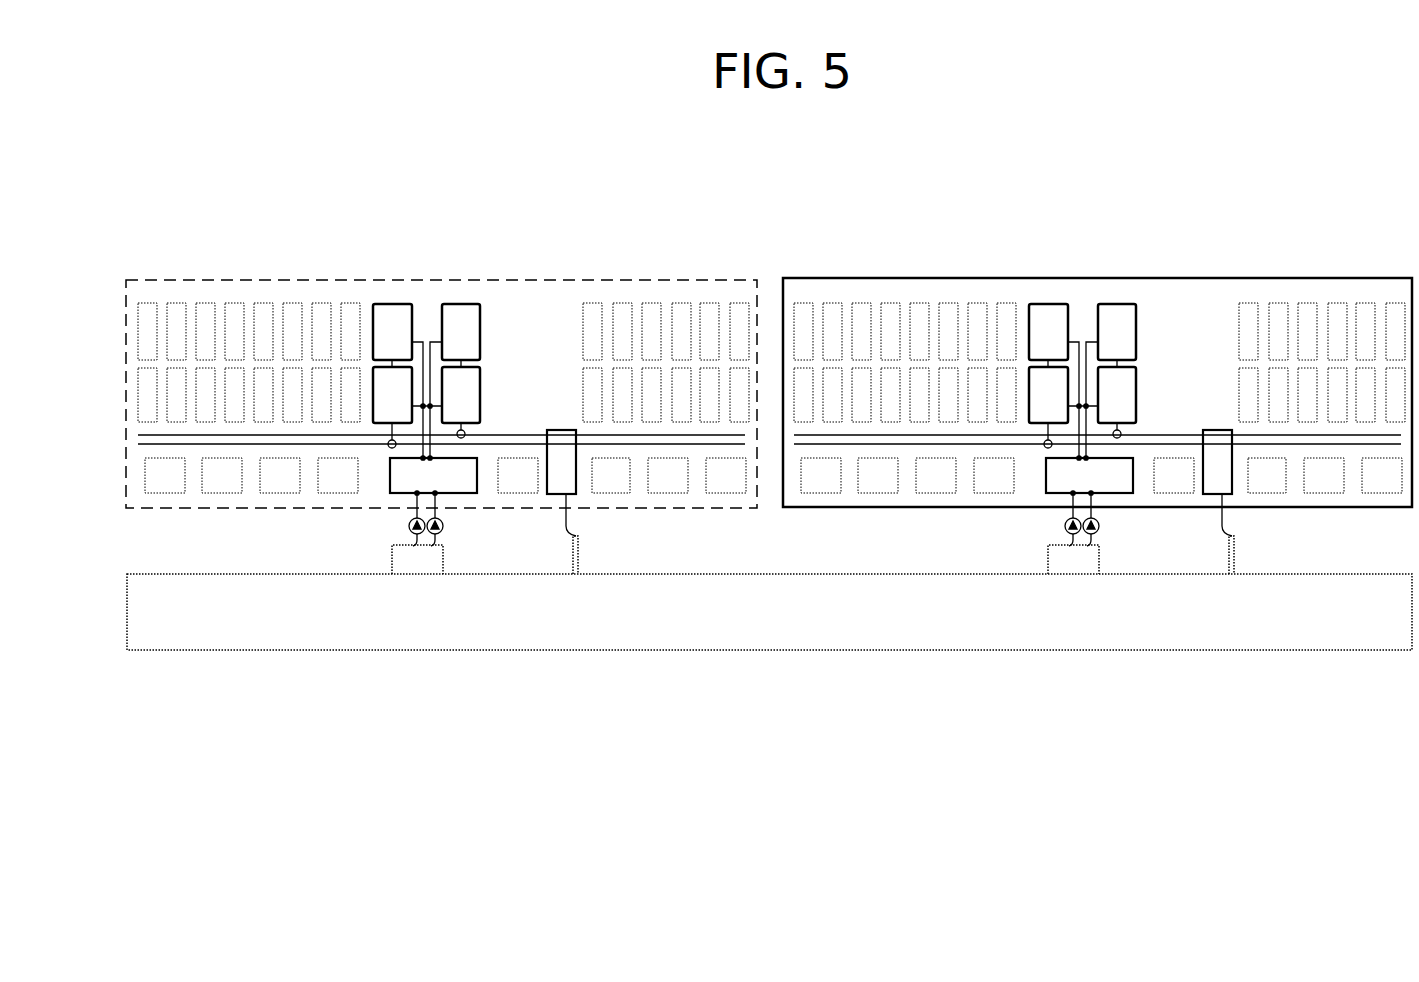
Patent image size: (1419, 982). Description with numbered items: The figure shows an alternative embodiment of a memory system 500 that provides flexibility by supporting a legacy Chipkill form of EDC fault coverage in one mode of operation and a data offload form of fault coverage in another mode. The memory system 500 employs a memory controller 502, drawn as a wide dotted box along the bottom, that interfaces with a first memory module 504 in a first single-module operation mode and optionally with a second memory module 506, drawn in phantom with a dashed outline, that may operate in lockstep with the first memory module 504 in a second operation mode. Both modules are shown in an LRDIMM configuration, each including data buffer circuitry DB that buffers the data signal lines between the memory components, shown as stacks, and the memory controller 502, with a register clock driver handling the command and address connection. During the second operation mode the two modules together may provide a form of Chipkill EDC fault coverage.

The memory system 500 is at (944, 196).
The memory controller 502 is at (772, 652).
The first memory module 504 is at (1200, 277).
The second memory module 506 is at (630, 278).